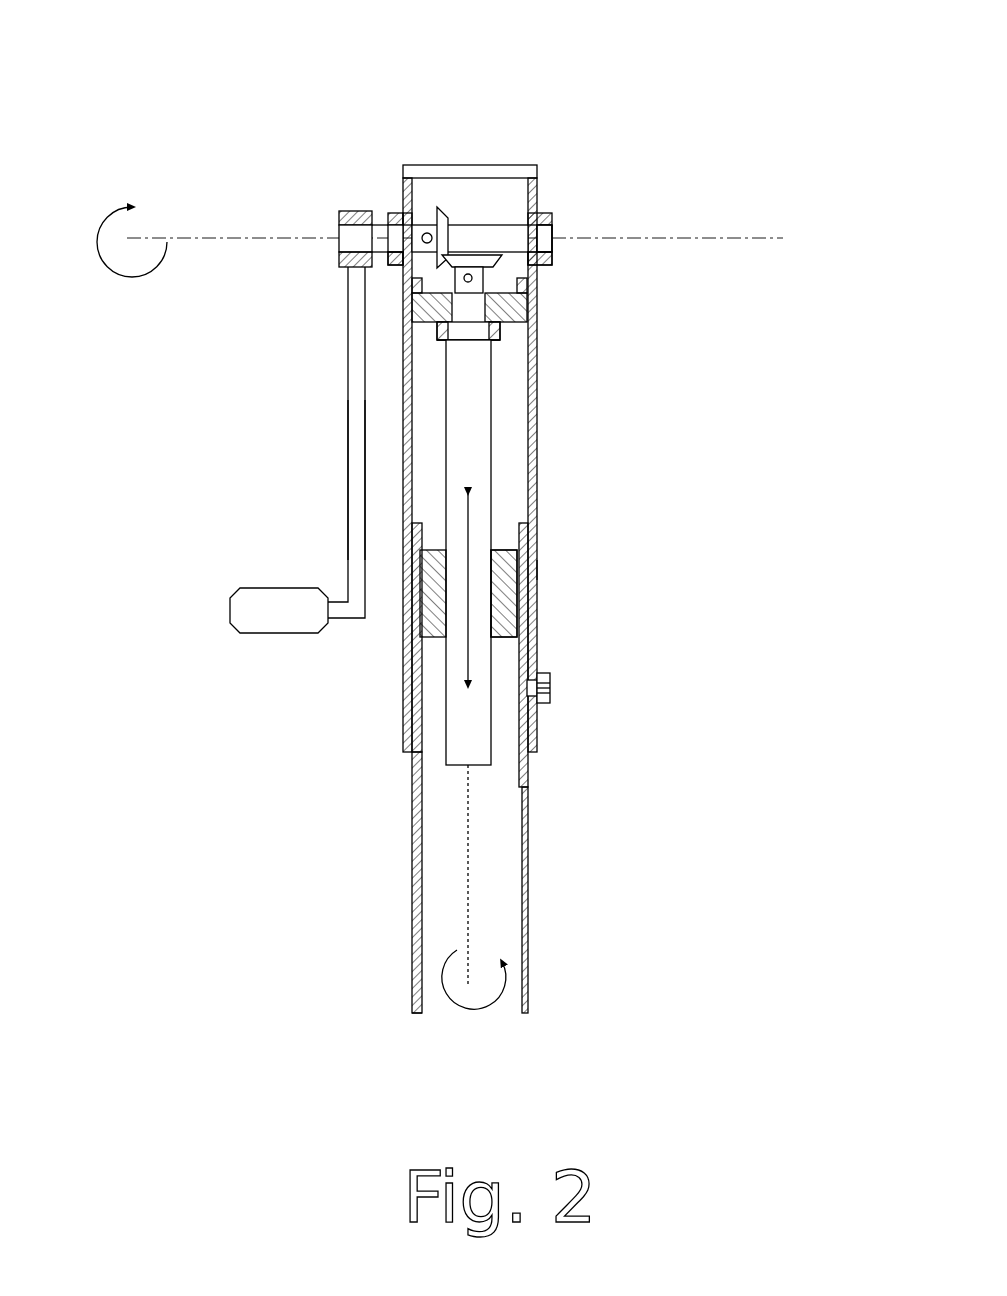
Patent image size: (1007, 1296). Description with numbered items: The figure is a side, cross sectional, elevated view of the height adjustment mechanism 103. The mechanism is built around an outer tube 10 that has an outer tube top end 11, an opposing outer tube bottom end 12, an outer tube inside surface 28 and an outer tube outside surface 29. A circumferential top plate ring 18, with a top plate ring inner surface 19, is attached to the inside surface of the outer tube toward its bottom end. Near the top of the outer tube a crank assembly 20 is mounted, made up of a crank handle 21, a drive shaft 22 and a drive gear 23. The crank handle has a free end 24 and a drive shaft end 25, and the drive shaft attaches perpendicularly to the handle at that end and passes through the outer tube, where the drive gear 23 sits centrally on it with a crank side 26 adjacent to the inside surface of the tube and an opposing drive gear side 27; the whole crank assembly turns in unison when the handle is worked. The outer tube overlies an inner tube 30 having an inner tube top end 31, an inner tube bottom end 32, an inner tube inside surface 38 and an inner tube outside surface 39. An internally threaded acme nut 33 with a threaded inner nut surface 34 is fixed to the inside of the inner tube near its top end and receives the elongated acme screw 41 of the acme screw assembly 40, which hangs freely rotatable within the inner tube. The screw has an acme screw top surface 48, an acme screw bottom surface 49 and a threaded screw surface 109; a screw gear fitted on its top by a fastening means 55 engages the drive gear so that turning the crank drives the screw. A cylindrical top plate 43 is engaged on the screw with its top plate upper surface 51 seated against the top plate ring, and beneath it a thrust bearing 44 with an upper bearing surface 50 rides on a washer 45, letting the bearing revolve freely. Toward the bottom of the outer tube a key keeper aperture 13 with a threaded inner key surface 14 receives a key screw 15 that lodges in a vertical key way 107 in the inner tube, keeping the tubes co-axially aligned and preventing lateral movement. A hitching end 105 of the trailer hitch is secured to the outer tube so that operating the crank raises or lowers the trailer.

The outer tube 10 is at (528, 423).
The outer tube top end 11 is at (512, 165).
The outer tube bottom end 12 is at (405, 757).
The key keeper aperture 13 is at (550, 692).
The threaded inner key surface 14 is at (537, 670).
The key screw 15 is at (550, 702).
The top plate ring 18 is at (410, 285).
The top plate ring inner surface 19 is at (413, 297).
The crank assembly 20 is at (315, 257).
The crank handle 21 is at (348, 527).
The drive shaft 22 is at (553, 213).
The drive gear 23 is at (410, 195).
The free end 24 is at (230, 612).
The drive shaft end 25 is at (338, 212).
The crank side 26 is at (400, 212).
The drive gear side 27 is at (443, 208).
The outer tube inside surface 28 is at (410, 495).
The outer tube outside surface 29 is at (400, 505).
The inner tube 30 is at (515, 894).
The inner tube top end 31 is at (510, 528).
The inner tube bottom end 32 is at (493, 1015).
The acme nut 33 is at (535, 587).
The threaded inner nut surface 34 is at (503, 614).
The inner tube inside surface 38 is at (417, 887).
The inner tube outside surface 39 is at (413, 997).
The acme screw assembly 40 is at (518, 482).
The acme screw 41 is at (475, 470).
The top plate 43 is at (611, 322).
The thrust bearing 44 is at (503, 333).
The washer 45 is at (498, 340).
The acme screw top surface 48 is at (553, 235).
The acme screw bottom surface 49 is at (463, 767).
The upper bearing surface 50 is at (502, 272).
The top plate upper surface 51 is at (552, 243).
The fastening means 55 is at (277, 166).
The height adjustment mechanism 103 is at (612, 568).
The hitching end 105 is at (480, 225).
The key way 107 is at (528, 782).
The threaded screw surface 109 is at (420, 713).